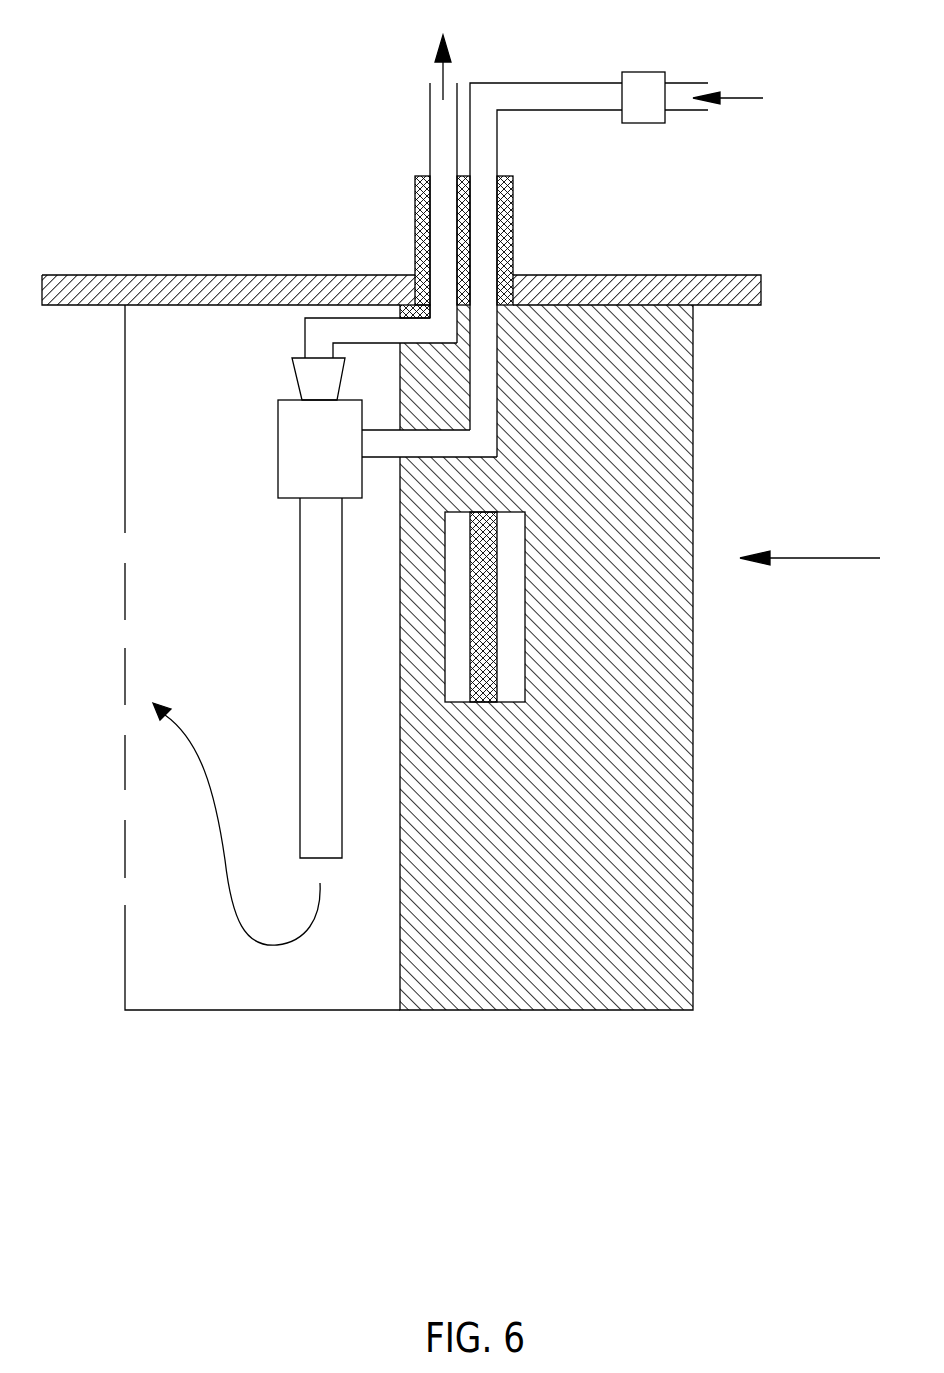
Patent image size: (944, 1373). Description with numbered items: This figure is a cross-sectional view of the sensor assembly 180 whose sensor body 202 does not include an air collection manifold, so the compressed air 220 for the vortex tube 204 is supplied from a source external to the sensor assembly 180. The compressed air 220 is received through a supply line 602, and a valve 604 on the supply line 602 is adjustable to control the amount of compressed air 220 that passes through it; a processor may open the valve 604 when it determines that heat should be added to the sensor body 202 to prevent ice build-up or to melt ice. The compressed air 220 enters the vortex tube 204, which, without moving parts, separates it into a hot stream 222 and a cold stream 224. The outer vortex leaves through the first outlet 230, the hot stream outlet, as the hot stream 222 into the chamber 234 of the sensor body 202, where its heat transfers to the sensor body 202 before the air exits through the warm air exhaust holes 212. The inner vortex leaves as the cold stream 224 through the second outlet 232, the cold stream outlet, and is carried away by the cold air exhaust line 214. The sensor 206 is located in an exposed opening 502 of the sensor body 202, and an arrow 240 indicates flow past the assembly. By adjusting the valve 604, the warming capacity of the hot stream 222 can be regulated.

The sensor assembly 180 is at (678, 1078).
The sensor body 202 is at (120, 387).
The vortex tube 204 is at (266, 484).
The sensor 206 is at (468, 518).
The warm air exhaust holes 212 is at (127, 720).
The cold air exhaust line 214 is at (297, 333).
The compressed air 220 is at (742, 98).
The hot stream 222 is at (240, 915).
The cold stream 224 is at (438, 72).
The first outlet 230 is at (300, 862).
The second outlet 232 is at (297, 378).
The chamber 234 is at (232, 616).
The external flow 240 is at (820, 558).
The exposed opening 502 is at (517, 562).
The supply line 602 is at (528, 83).
The valve 604 is at (641, 72).